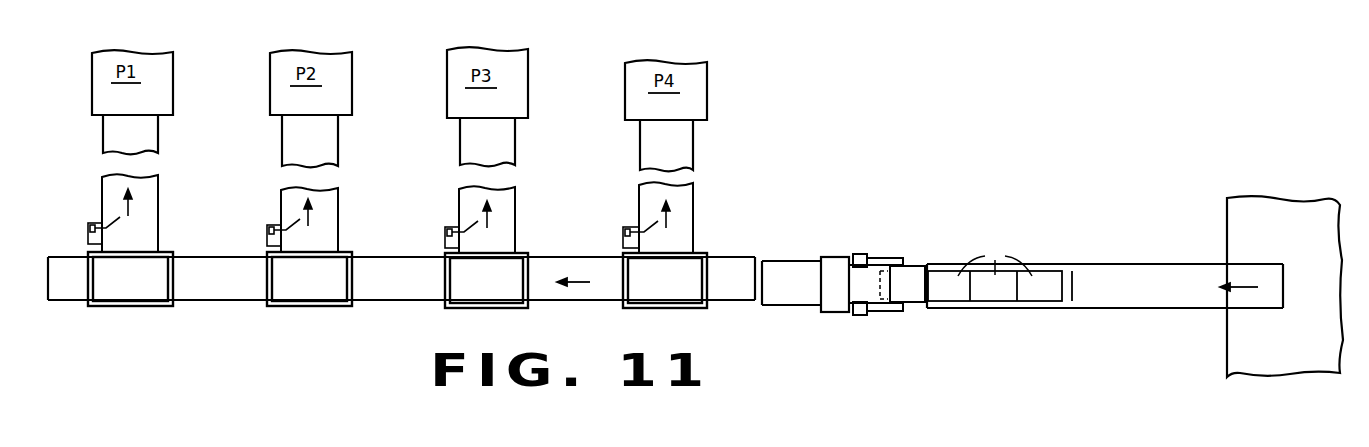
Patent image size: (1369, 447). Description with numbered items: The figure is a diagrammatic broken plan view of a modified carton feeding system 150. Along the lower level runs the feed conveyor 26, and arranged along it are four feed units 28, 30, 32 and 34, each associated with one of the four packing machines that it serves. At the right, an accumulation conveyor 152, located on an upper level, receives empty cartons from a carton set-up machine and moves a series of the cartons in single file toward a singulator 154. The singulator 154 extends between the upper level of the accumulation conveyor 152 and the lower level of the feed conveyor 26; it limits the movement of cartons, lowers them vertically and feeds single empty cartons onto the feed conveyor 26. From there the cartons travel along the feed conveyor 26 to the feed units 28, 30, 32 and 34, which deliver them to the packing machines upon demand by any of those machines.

The feed conveyor 26 is at (213, 298).
The feed unit 28 is at (681, 289).
The feed unit 30 is at (503, 289).
The feed unit 32 is at (325, 288).
The feed unit 34 is at (146, 288).
The modified carton feeding system 150 is at (897, 251).
The accumulation conveyor 152 is at (1125, 270).
The singulator 154 is at (836, 254).